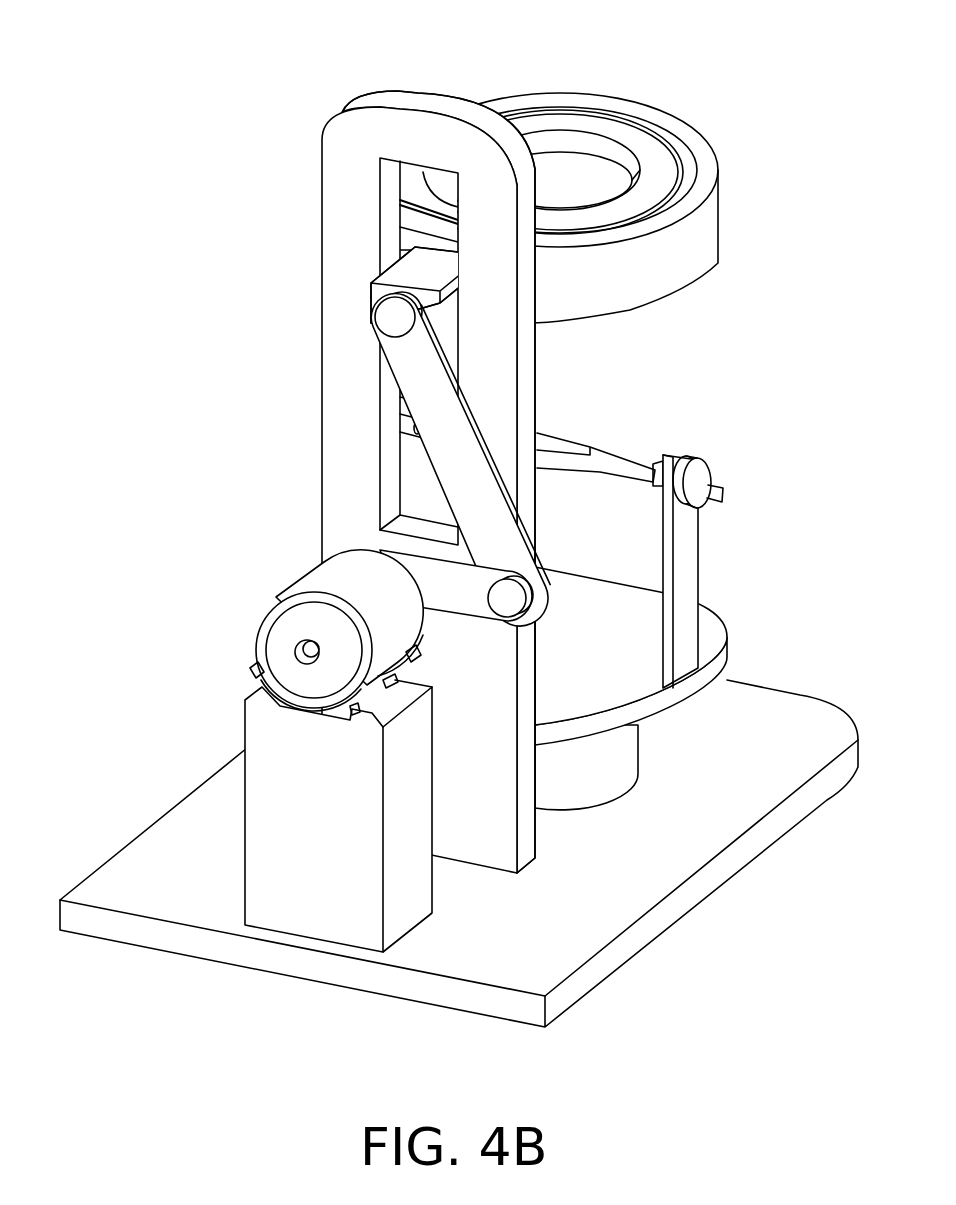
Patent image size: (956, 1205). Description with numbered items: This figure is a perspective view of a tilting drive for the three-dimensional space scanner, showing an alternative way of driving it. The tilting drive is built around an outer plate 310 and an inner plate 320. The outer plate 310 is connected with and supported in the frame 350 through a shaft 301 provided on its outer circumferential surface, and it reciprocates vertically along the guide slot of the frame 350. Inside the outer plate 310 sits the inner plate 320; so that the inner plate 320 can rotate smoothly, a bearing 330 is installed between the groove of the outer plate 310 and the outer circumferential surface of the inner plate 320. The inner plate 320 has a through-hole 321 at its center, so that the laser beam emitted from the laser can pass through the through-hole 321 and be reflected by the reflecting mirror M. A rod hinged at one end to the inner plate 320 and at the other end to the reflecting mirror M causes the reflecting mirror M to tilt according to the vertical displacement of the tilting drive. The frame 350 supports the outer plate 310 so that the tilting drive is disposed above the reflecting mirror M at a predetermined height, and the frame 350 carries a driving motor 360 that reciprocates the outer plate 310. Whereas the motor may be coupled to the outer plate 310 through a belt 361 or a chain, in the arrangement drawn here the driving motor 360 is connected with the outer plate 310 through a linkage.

The shaft 301 is at (397, 277).
The outer plate 310 is at (668, 127).
The inner plate 320 is at (603, 125).
The through-hole 321 is at (553, 142).
The bearing 330 is at (683, 160).
The frame 350 is at (397, 105).
The driving motor 360 is at (317, 572).
The belt 361 is at (447, 413).
The reflecting mirror M is at (639, 460).